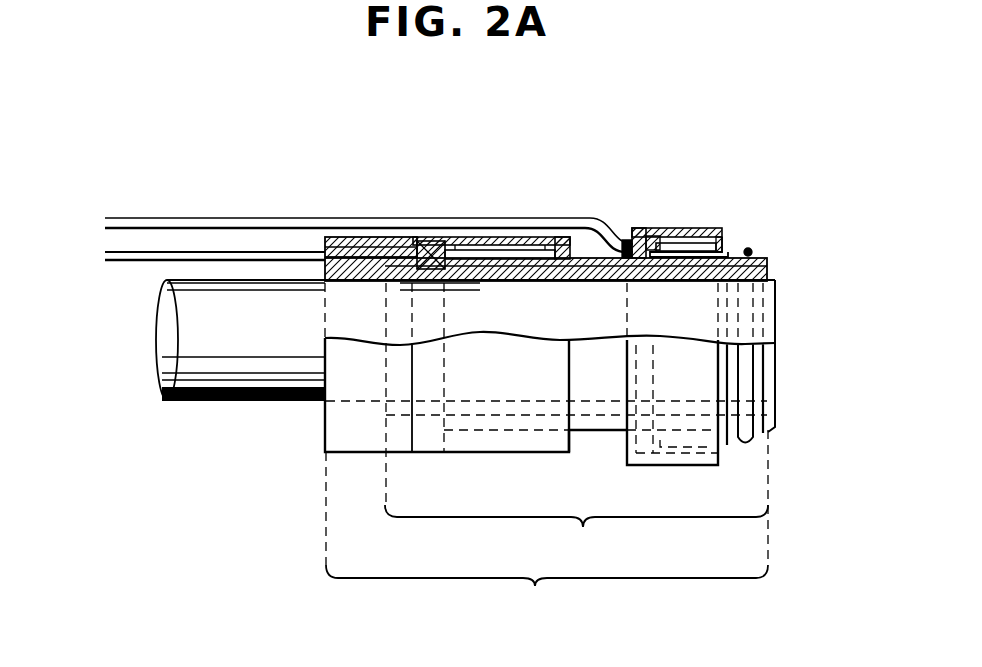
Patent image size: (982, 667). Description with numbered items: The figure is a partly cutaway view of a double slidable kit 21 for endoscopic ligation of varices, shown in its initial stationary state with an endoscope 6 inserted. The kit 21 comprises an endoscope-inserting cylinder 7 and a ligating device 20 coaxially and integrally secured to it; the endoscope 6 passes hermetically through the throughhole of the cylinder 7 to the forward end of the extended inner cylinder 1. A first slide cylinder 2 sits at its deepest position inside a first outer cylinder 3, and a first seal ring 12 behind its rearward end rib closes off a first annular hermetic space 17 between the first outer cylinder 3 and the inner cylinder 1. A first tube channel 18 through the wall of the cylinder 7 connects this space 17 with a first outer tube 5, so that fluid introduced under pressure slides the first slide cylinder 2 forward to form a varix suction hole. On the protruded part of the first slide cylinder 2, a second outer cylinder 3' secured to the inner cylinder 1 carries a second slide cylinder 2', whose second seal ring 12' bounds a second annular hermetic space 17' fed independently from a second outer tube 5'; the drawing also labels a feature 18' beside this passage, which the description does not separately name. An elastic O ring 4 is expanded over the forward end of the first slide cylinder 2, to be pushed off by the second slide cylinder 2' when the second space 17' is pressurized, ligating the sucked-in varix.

The inner cylinder 1 is at (767, 270).
The first slide cylinder 2 is at (501, 204).
The second slide cylinder 2' is at (715, 217).
The first outer cylinder 3 is at (491, 204).
The second outer cylinder 3' is at (689, 195).
The elastic O ring 4 is at (748, 447).
The first outer tube 5 is at (215, 205).
The second outer tube 5' is at (369, 201).
The endoscope 6 is at (200, 380).
The endoscope-inserting cylinder 7 is at (375, 440).
The first seal ring 12 is at (415, 209).
The second seal ring 12' is at (646, 174).
The first annular hermetic space 17 is at (371, 198).
The second annular hermetic space 17' is at (600, 165).
The first tube channel 18 is at (344, 203).
The mounting block 18' is at (566, 165).
The ligating device 20 is at (612, 565).
The double slidable kit 21 is at (558, 630).